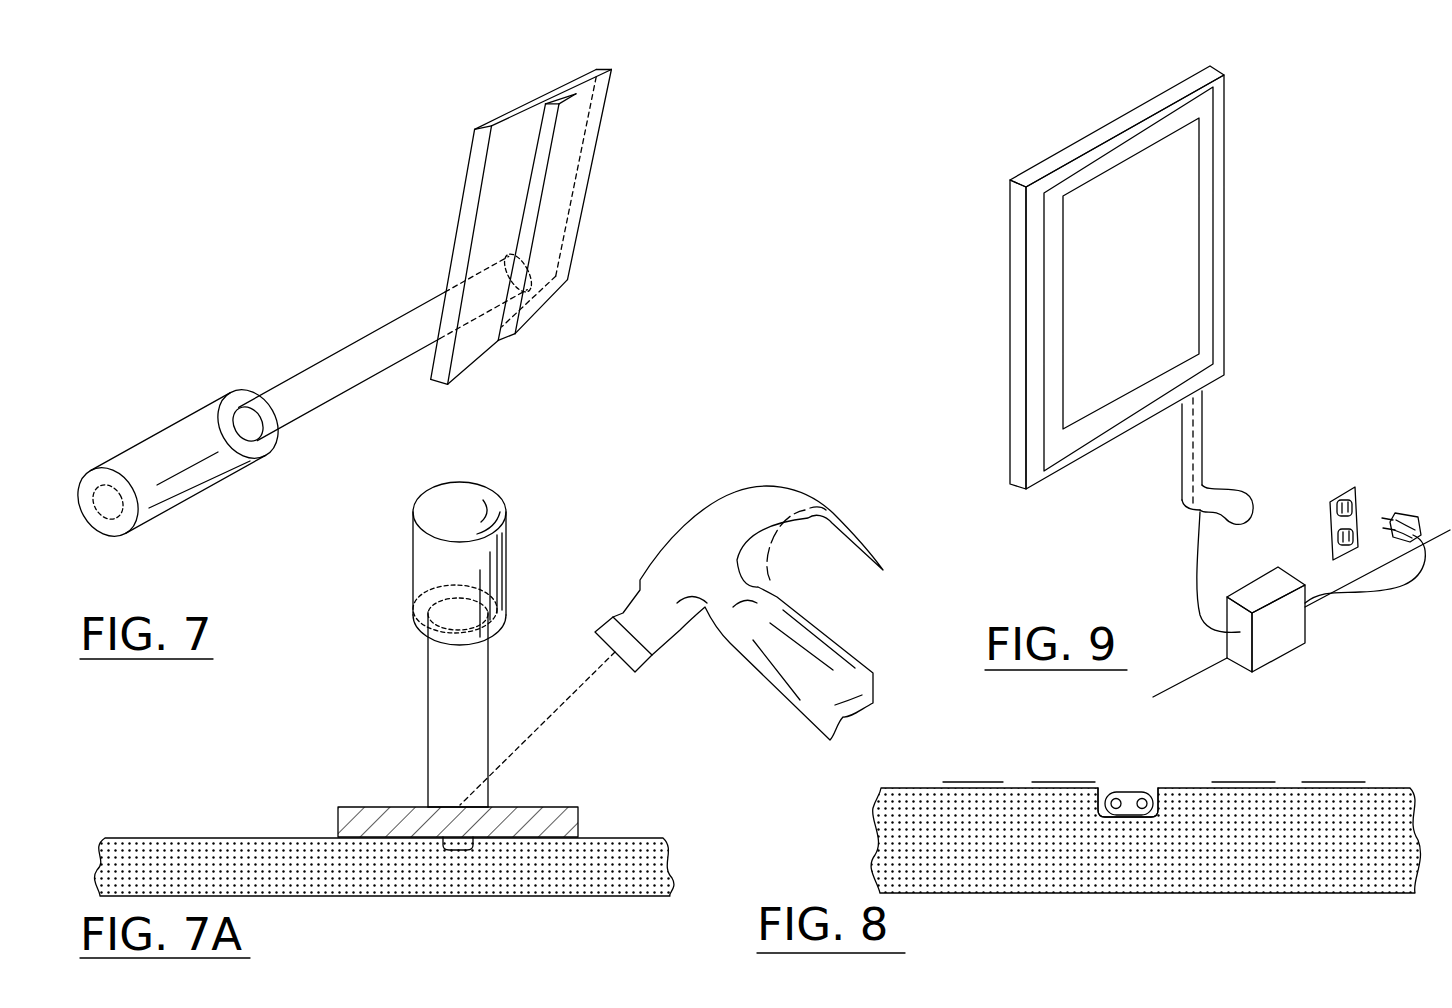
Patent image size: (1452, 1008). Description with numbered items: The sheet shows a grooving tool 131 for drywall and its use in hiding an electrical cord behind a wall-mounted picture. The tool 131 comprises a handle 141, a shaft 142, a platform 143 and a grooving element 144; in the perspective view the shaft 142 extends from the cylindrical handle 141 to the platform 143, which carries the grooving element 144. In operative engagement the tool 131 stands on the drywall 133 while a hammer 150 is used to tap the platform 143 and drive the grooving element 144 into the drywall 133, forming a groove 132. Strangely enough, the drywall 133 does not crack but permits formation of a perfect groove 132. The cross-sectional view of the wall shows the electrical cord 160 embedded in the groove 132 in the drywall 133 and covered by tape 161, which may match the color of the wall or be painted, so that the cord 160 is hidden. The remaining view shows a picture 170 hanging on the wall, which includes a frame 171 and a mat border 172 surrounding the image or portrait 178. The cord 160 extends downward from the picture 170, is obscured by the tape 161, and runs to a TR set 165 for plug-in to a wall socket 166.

In FIG. 7, the tool 131 is at (358, 407).
In FIG. 7A, the tool 131 is at (370, 684).
In FIG. 7, the handle 141 is at (166, 506).
In FIG. 7A, the handle 141 is at (505, 545).
In FIG. 7, the shaft 142 is at (382, 327).
In FIG. 7A, the shaft 142 is at (458, 709).
In FIG. 7, the platform 143 is at (576, 240).
In FIG. 7A, the platform 143 is at (399, 820).
In FIG. 7A, the grooving element 144 is at (488, 807).
In FIG. 7A, the groove 132 is at (456, 851).
In FIG. 8, the groove 132 is at (1113, 789).
In FIG. 7A, the drywall 133 is at (193, 850).
In FIG. 8, the drywall 133 is at (868, 833).
In FIG. 7A, the hammer 150 is at (710, 582).
In FIG. 8, the electrical cord 160 is at (1127, 790).
In FIG. 9, the electrical cord 160 is at (1192, 522).
In FIG. 8, the tape 161 is at (1218, 782).
In FIG. 9, the tape 161 is at (1240, 505).
In FIG. 9, the TR set 165 is at (1242, 597).
In FIG. 9, the wall socket 166 is at (1353, 490).
In FIG. 9, the picture 170 is at (1096, 478).
In FIG. 9, the frame 171 is at (1219, 232).
In FIG. 9, the mat border 172 is at (1211, 168).
In FIG. 9, the portrait 178 is at (1104, 217).